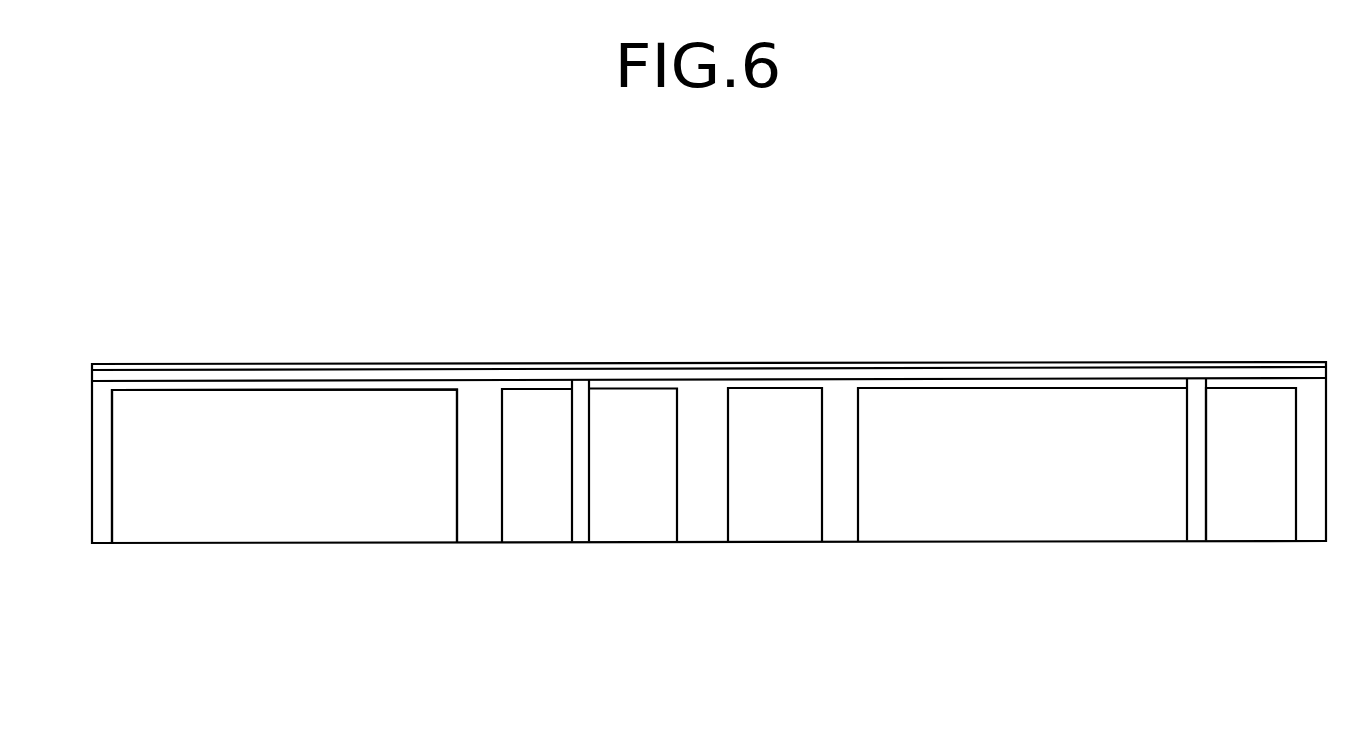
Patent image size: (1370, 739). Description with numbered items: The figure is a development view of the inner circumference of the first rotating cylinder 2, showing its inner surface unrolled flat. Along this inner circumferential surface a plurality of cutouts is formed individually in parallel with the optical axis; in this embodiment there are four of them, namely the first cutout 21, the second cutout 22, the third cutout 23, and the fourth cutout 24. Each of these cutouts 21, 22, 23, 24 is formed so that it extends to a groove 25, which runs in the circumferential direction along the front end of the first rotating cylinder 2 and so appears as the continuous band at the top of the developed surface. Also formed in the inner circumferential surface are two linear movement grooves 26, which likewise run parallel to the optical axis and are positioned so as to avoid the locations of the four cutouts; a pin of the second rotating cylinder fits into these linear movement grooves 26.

The first rotating cylinder 2 is at (287, 435).
The first cutout 21 is at (700, 433).
The second cutout 22 is at (98, 443).
The third cutout 23 is at (476, 433).
The fourth cutout 24 is at (840, 433).
The groove 25 is at (398, 384).
The linear movement groove 26 is at (1197, 515).